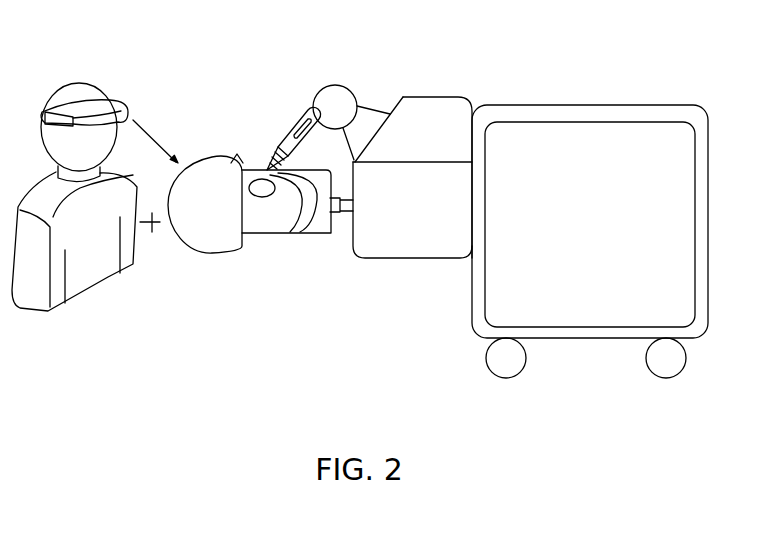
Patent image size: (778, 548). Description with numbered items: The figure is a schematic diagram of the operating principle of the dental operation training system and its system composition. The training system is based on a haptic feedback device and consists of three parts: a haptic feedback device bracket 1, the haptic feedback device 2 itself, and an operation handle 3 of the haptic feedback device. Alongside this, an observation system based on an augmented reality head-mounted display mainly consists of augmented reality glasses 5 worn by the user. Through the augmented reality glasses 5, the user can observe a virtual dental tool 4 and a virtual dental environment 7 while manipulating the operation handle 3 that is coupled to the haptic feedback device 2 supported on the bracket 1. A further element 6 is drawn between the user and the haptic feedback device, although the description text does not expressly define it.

The haptic feedback device bracket 1 is at (460, 97).
The haptic feedback device 2 is at (358, 95).
The operation handle 3 is at (268, 168).
The virtual dental tool 4 is at (267, 168).
The augmented reality glasses 5 is at (132, 100).
The handheld device 6 is at (215, 255).
The virtual dental environment 7 is at (274, 234).